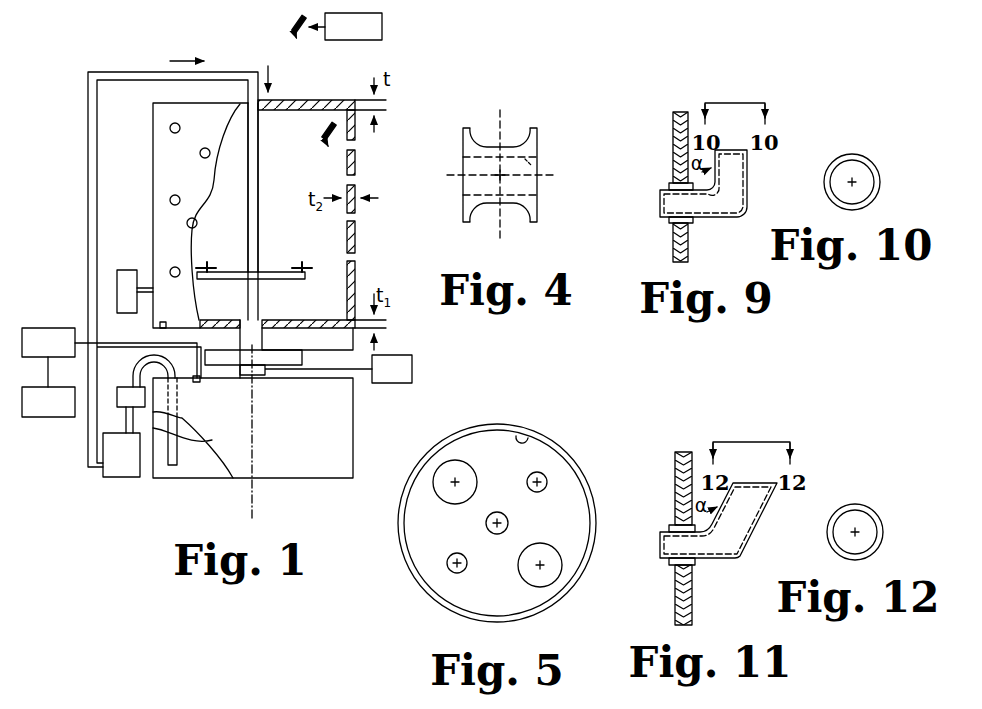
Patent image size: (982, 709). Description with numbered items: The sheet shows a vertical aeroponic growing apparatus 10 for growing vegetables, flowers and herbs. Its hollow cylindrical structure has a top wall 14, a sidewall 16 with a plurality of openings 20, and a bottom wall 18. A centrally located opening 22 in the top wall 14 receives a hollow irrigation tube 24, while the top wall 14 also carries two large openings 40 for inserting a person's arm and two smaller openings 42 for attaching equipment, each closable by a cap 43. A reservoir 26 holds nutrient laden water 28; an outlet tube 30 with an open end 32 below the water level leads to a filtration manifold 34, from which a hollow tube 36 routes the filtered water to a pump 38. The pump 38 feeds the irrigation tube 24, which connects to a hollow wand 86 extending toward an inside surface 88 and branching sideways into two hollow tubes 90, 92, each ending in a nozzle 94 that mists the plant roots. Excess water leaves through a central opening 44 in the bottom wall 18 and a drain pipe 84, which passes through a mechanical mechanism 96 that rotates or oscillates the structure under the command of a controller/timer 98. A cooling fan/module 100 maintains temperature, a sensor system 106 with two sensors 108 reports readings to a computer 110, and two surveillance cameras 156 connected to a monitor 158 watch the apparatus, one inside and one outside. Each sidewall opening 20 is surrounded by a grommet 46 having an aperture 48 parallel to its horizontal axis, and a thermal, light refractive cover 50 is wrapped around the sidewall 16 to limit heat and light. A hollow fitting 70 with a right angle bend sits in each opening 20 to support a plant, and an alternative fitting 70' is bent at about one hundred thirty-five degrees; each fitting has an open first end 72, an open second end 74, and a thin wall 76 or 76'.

In FIG. 1, the vertical aeroponic growing apparatus 10 is at (421, 67).
In FIG. 5, the vertical aeroponic growing apparatus 10 is at (586, 421).
In FIG. 1, the top wall 14 is at (346, 100).
In FIG. 5, the top wall 14 is at (565, 461).
In FIG. 1, the sidewall 16 is at (168, 222).
In FIG. 5, the sidewall 16 is at (523, 436).
In FIG. 9, the sidewall 16 is at (675, 112).
In FIG. 11, the sidewall 16 is at (677, 452).
In FIG. 1, the bottom wall 18 is at (331, 328).
In FIG. 1, the openings 20 is at (171, 196).
In FIG. 1, the opening 22 is at (241, 104).
In FIG. 5, the opening 22 is at (498, 512).
In FIG. 1, the irrigation tube 24 is at (231, 72).
In FIG. 1, the reservoir 26 is at (353, 414).
In FIG. 1, the nutrient laden water 28 is at (193, 445).
In FIG. 1, the outlet tube 30 is at (157, 358).
In FIG. 1, the open end 32 is at (173, 467).
In FIG. 1, the filtration manifold 34 is at (124, 387).
In FIG. 1, the hollow tube 36 is at (126, 423).
In FIG. 1, the pump 38 is at (120, 477).
In FIG. 1, the large openings 40 is at (304, 100).
In FIG. 5, the large openings 40 is at (476, 481).
In FIG. 5, the smaller openings 42 is at (546, 489).
In FIG. 5, the cap 43 is at (446, 470).
In FIG. 1, the central opening 44 is at (242, 320).
In FIG. 4, the grommet 46 is at (548, 97).
In FIG. 9, the grommet 46 is at (690, 240).
In FIG. 11, the grommet 46 is at (693, 578).
In FIG. 4, the aperture 48 is at (540, 162).
In FIG. 9, the thermal, light refractive cover 50 is at (681, 112).
In FIG. 11, the thermal, light refractive cover 50 is at (684, 452).
In FIG. 9, the fitting 70 is at (732, 138).
In FIG. 10, the fitting 70 is at (874, 157).
In FIG. 11, the fitting 70' is at (744, 478).
In FIG. 12, the fitting 70' is at (880, 506).
In FIG. 9, the first end 72 is at (660, 205).
In FIG. 11, the first end 72 is at (660, 547).
In FIG. 9, the second end 74 is at (733, 150).
In FIG. 11, the second end 74 is at (756, 483).
In FIG. 10, the wall 76 is at (852, 162).
In FIG. 12, the wall 76' is at (855, 512).
In FIG. 1, the drain pipe 84 is at (263, 340).
In FIG. 1, the wand 86 is at (258, 160).
In FIG. 1, the inside surface 88 is at (346, 288).
In FIG. 1, the hollow tube 90 is at (275, 272).
In FIG. 1, the hollow tube 92 is at (251, 263).
In FIG. 1, the nozzle 94 is at (207, 262).
In FIG. 1, the mechanical mechanism 96 is at (302, 357).
In FIG. 1, the controller/timer 98 is at (392, 369).
In FIG. 1, the cooling fan/module 100 is at (128, 307).
In FIG. 1, the sensor system 106 is at (48, 342).
In FIG. 1, the sensors 108 is at (165, 322).
In FIG. 1, the computer 110 is at (48, 387).
In FIG. 1, the surveillance camera 156 is at (293, 22).
In FIG. 1, the monitor 158 is at (382, 27).